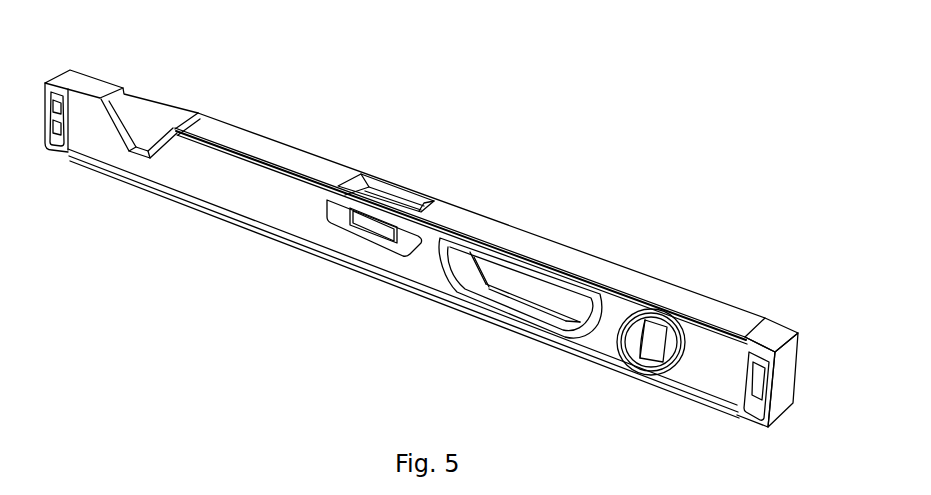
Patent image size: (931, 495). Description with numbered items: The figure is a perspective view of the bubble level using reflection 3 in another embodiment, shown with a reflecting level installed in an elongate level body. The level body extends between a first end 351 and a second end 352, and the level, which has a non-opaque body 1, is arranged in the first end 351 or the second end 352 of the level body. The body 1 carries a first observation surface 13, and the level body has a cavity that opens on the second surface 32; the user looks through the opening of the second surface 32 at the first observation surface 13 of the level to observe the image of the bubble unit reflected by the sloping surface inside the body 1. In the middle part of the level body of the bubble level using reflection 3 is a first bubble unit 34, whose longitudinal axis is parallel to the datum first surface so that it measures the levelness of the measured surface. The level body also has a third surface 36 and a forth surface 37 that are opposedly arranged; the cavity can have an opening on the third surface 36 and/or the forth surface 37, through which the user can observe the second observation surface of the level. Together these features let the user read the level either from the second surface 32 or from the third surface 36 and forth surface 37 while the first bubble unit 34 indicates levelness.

The body 1 is at (152, 135).
The bubble level using reflection 3 is at (248, 115).
The first observation surface 13 is at (127, 102).
The second surface 32 is at (305, 170).
The first bubble unit 34 is at (377, 227).
The third surface 36 is at (205, 175).
The forth surface 37 is at (265, 137).
The first end 351 is at (53, 152).
The second end 352 is at (765, 340).